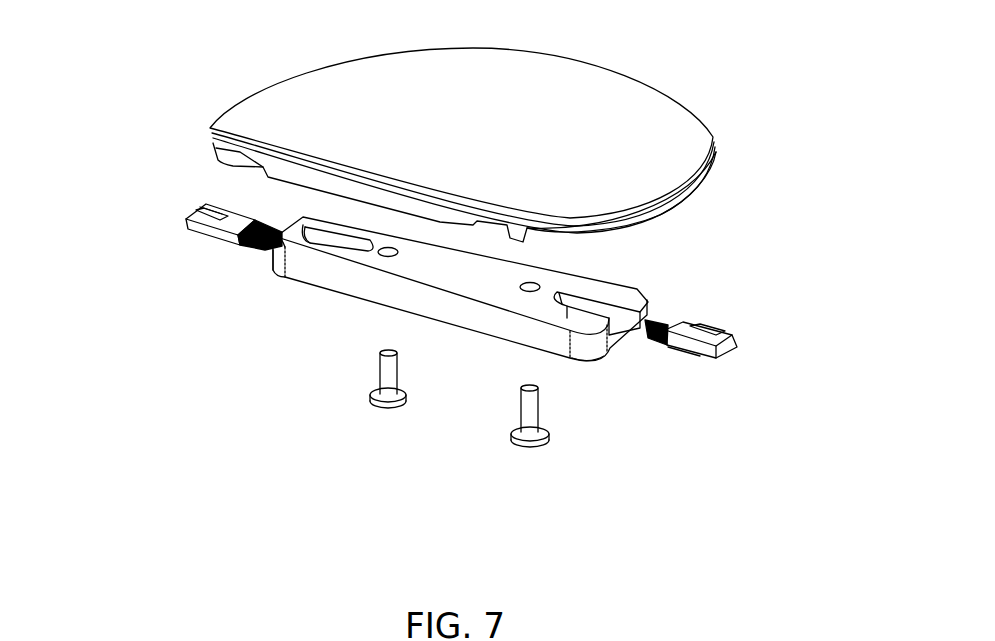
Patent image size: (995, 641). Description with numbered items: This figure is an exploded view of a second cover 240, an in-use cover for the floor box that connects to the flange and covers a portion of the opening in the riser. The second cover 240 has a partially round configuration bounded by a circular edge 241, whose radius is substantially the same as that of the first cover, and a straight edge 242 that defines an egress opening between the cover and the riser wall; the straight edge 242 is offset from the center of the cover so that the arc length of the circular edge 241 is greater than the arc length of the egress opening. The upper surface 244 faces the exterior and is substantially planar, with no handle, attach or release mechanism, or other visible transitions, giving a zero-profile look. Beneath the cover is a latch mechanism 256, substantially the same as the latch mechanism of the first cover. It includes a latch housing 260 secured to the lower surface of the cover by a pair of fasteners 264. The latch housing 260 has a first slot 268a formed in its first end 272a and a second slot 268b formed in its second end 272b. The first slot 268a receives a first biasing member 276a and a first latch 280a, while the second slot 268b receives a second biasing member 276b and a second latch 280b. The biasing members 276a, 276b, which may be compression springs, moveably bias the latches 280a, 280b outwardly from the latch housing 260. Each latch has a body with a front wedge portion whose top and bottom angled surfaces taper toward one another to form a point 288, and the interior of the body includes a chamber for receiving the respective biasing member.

The second cover 240 is at (757, 92).
The circular edge 241 is at (255, 82).
The straight edge 242 is at (262, 148).
The upper surface 244 is at (519, 113).
The latch mechanism 256 is at (312, 413).
The latch housing 260 is at (476, 282).
The fasteners 264 is at (522, 413).
The first slot 268a is at (333, 240).
The second slot 268b is at (585, 303).
The first end 272a is at (290, 277).
The second end 272b is at (585, 352).
The first biasing member 276a is at (257, 243).
The second biasing member 276b is at (660, 327).
The first latch 280a is at (163, 235).
The second latch 280b is at (715, 312).
The point 288 is at (730, 350).